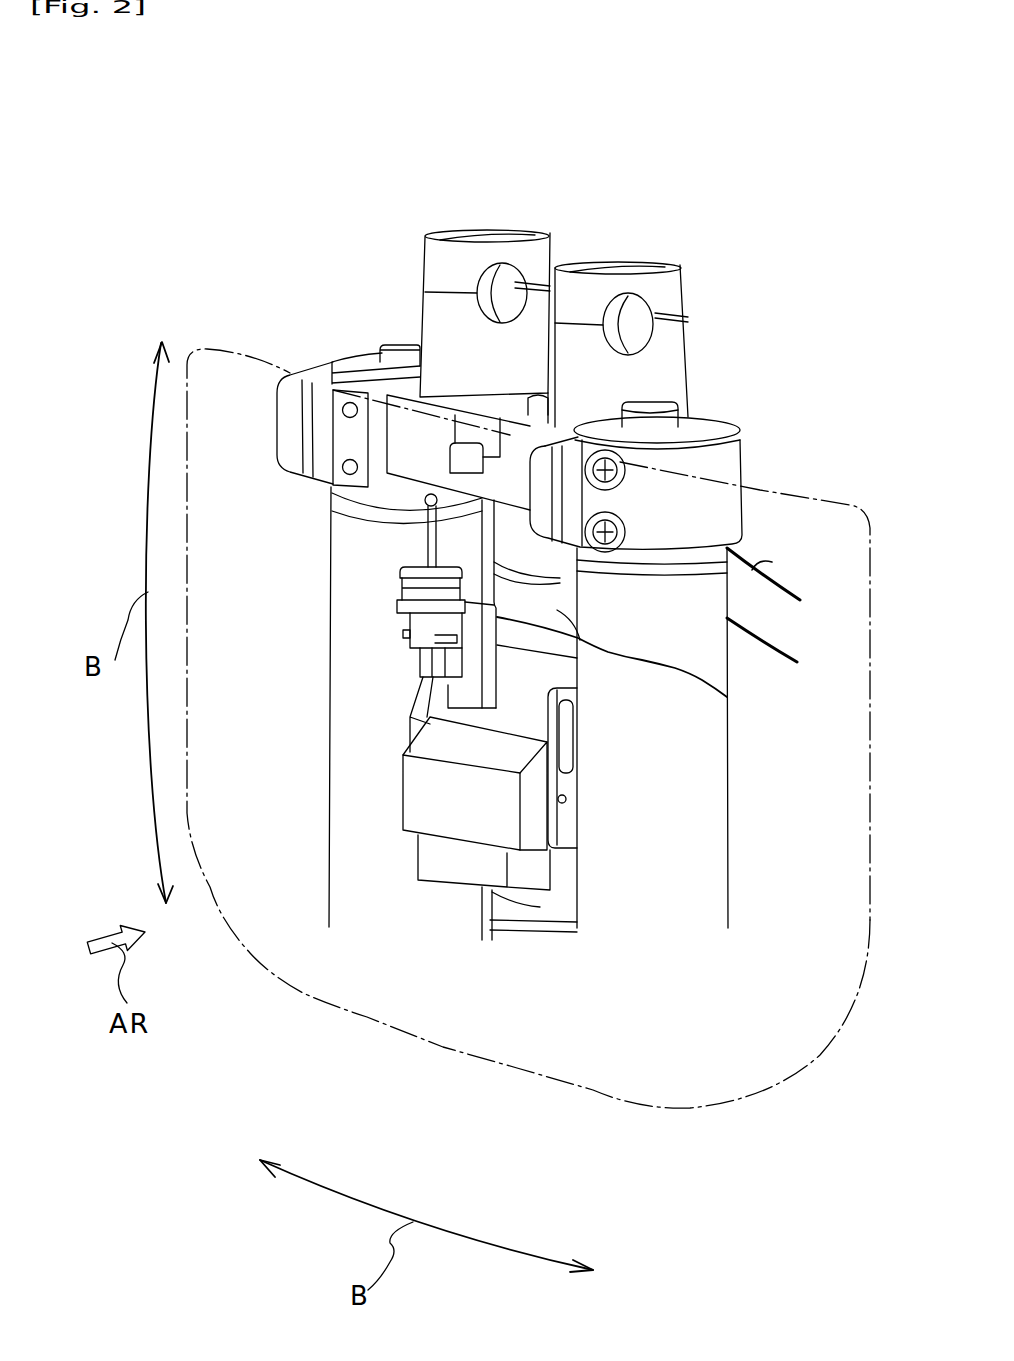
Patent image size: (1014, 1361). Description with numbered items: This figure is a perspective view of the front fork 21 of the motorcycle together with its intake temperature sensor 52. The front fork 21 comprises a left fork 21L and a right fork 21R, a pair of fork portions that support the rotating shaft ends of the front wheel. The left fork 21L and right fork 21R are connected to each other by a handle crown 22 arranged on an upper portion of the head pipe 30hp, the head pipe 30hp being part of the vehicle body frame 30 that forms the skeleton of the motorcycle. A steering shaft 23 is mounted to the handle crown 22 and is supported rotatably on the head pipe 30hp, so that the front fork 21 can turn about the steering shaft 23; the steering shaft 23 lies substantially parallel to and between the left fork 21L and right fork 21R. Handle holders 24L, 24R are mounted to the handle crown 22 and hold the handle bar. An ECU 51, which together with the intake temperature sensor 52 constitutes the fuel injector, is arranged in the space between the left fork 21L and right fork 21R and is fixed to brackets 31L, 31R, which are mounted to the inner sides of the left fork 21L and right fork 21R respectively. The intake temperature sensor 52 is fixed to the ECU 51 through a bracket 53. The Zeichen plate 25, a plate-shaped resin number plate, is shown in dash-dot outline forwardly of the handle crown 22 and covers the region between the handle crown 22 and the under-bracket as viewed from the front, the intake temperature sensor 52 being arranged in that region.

The front fork 21 is at (573, 1160).
The right fork 21R is at (378, 877).
The left fork 21L is at (660, 867).
The handle crown 22 is at (425, 478).
The steering shaft 23 is at (560, 578).
The handle holder 24R is at (480, 253).
The handle holder 24L is at (613, 288).
The Zeichen plate 25 is at (793, 1078).
The vehicle body frame 30 is at (773, 607).
The head pipe 30hp is at (727, 697).
The bracket 31R is at (413, 725).
The bracket 31L is at (567, 830).
The ECU 51 is at (457, 818).
The intake temperature sensor 52 is at (435, 628).
The bracket 53 is at (468, 682).